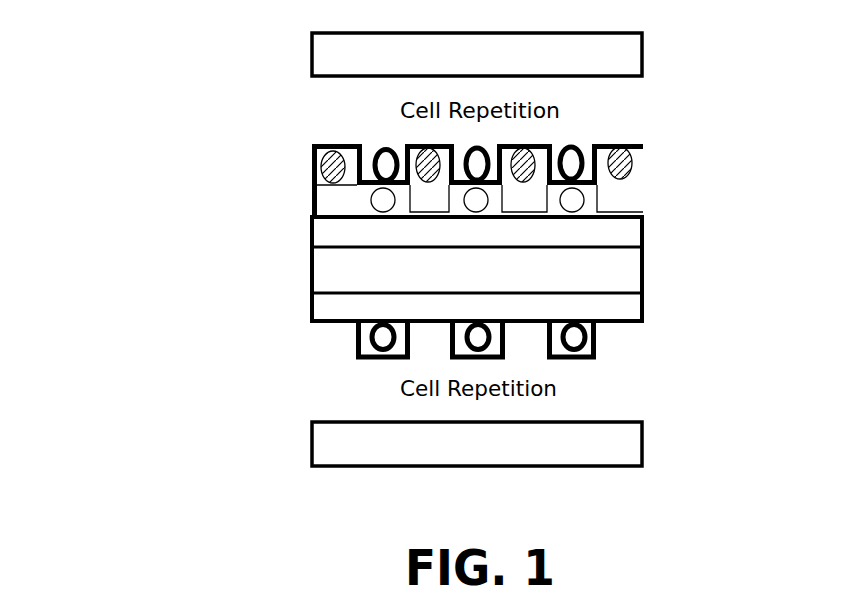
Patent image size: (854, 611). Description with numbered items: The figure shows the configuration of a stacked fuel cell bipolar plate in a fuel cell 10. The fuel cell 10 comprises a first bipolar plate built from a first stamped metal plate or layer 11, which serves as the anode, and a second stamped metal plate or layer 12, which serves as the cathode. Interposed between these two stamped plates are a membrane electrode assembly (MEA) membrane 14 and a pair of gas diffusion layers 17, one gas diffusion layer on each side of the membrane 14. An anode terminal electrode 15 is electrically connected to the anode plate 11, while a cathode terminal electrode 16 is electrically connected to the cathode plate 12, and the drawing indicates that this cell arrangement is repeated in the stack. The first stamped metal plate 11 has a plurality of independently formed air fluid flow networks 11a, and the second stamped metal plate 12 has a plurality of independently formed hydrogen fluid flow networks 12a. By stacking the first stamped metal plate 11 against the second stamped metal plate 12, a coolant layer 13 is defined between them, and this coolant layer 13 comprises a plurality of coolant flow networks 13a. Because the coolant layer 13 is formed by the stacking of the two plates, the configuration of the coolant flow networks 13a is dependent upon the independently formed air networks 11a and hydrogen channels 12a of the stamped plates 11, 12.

The fuel cell 10 is at (103, 130).
The first stamped metal plate 11 is at (485, 216).
The air fluid flow networks 11a is at (372, 150).
The second stamped metal plate 12 is at (643, 212).
The hydrogen fluid flow networks 12a is at (370, 200).
The coolant layer 13 is at (525, 197).
The coolant flow networks 13a is at (322, 165).
The membrane electrode assembly membrane 14 is at (643, 268).
The anode terminal electrode 15 is at (643, 53).
The cathode terminal electrode 16 is at (312, 440).
The gas diffusion layers 17 is at (312, 305).